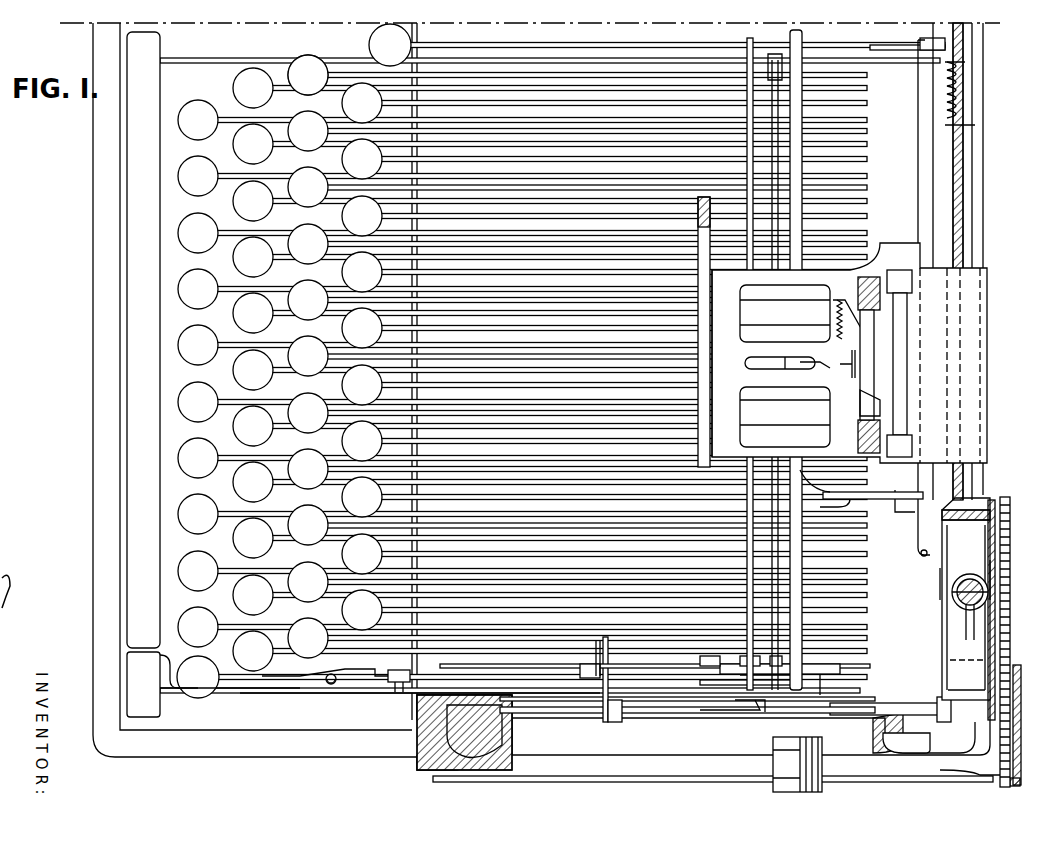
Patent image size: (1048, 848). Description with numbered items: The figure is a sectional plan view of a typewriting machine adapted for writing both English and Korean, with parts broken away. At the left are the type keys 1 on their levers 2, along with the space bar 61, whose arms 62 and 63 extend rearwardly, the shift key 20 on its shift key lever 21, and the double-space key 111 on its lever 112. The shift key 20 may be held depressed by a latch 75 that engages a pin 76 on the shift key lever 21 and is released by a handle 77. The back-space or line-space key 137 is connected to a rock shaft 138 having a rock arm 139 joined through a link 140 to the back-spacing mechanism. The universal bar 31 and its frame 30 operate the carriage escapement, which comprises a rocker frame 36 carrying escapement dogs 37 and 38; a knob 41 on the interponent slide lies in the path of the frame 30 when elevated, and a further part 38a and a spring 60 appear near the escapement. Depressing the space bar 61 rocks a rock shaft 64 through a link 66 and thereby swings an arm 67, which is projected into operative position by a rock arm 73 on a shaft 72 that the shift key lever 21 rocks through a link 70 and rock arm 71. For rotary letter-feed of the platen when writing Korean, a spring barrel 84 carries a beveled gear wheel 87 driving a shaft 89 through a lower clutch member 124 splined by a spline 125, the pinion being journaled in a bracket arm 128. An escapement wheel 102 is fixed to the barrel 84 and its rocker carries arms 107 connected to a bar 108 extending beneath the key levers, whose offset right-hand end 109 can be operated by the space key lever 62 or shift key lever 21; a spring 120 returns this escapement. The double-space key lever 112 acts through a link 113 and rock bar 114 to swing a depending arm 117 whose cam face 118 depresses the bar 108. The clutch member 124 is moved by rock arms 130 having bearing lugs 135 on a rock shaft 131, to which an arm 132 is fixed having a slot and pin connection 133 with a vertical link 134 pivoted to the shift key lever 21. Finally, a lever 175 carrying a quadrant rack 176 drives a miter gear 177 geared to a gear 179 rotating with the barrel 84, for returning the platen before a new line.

The type keys 1 is at (233, 426).
The levers 2 is at (342, 441).
The shift key 20 is at (190, 698).
The shift key lever 21 is at (262, 692).
The frame of universal bar 30 is at (802, 392).
The universal bar 31 is at (706, 332).
The rocker frame 36 is at (870, 400).
The escapement dog 37 is at (862, 366).
The escapement dog 38 is at (890, 346).
The block 38a is at (912, 445).
The knob 41 is at (850, 366).
The spring 60 is at (846, 322).
The space bar 61 is at (143, 340).
The arm 62 is at (300, 694).
The arm 63 is at (288, 70).
The rock shaft 64 is at (802, 32).
The link 66 is at (745, 722).
The arm 67 is at (818, 362).
The link 70 is at (770, 662).
The rock arm 71 is at (745, 678).
The shaft 72 is at (747, 38).
The rock arm 73 is at (752, 362).
The latch 75 is at (370, 690).
The pin 76 is at (402, 670).
The handle 77 is at (332, 685).
The spring barrel 84 is at (985, 498).
The beveled gear wheel 87 is at (995, 500).
The shaft 89 is at (970, 580).
The escapement wheel 102 is at (942, 574).
The arms 107 is at (900, 52).
The bar 108 is at (770, 80).
The right-hand end 109 is at (800, 680).
The double-space key 111 is at (144, 684).
The lever 112 is at (221, 696).
The link 113 is at (692, 712).
The rock bar 114 is at (740, 712).
The depending arm 117 is at (780, 740).
The cam face 118 is at (970, 770).
The spring 120 is at (968, 82).
The lower clutch member 124 is at (964, 580).
The spline 125 is at (970, 612).
The bracket arm 128 is at (968, 662).
The rock arms 130 is at (945, 615).
The rock shaft 131 is at (535, 716).
The arm 132 is at (605, 722).
The slot and pin connection 133 is at (655, 660).
The vertical link 134 is at (580, 661).
The bearing lugs 135 is at (955, 592).
The back-space key 137 is at (369, 40).
The rock shaft 138 is at (918, 140).
The rock arm 139 is at (903, 510).
The link 140 is at (861, 488).
The lever 175 is at (527, 782).
The quadrant rack 176 is at (1029, 791).
The miter gear 177 is at (1030, 716).
The gear 179 is at (1015, 524).